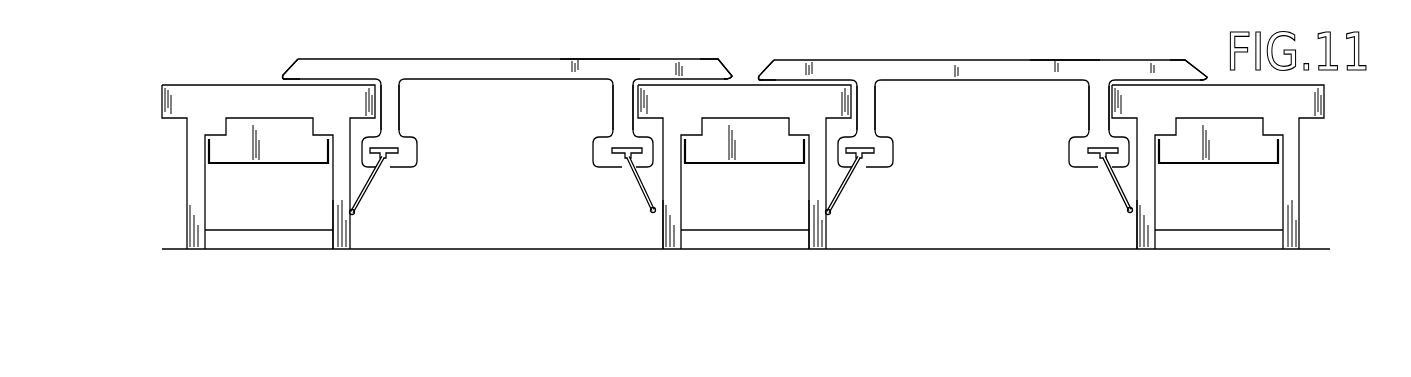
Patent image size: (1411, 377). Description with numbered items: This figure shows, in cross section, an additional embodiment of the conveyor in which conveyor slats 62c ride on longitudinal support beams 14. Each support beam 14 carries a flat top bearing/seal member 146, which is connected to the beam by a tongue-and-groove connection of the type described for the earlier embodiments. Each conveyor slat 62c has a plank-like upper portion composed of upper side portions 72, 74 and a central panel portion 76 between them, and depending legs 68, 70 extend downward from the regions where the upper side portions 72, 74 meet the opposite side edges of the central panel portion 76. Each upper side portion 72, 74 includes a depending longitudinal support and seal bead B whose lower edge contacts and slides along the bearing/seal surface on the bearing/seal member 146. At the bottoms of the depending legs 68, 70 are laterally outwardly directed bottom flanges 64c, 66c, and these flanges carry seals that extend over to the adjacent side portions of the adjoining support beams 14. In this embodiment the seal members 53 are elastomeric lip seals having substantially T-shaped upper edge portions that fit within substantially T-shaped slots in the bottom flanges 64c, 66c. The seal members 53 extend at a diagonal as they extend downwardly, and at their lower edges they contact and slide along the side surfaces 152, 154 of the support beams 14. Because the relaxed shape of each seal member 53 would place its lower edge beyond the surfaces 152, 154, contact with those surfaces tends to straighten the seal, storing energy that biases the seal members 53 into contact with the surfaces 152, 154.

The longitudinal support beam 14 is at (278, 233).
The flat top bearing/seal member 146 is at (275, 152).
The side surface of support beam 152 is at (350, 231).
The side surface of support beam 154 is at (660, 230).
The seal member 53 is at (653, 200).
The conveyor slat 62c is at (429, 58).
The bottom flange 64c is at (417, 153).
The bottom flange 66c is at (592, 156).
The depending leg 68 is at (392, 107).
The depending leg 70 is at (620, 102).
The upper side portion 72 is at (318, 66).
The upper side portion 74 is at (695, 70).
The central panel portion 76 is at (600, 70).
The support and seal bead B is at (286, 88).